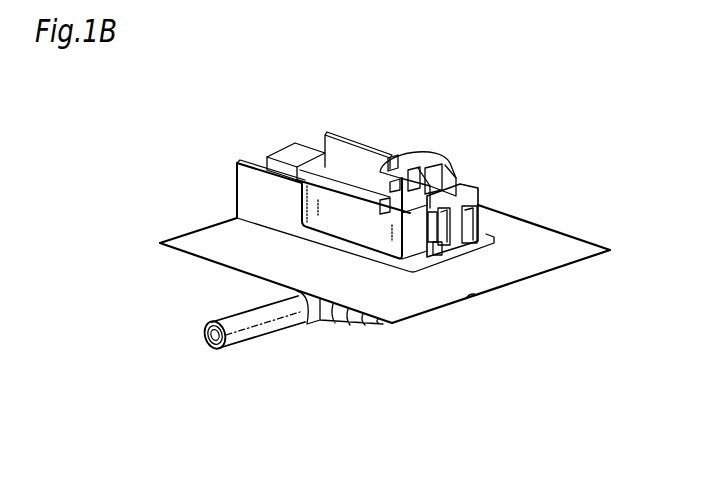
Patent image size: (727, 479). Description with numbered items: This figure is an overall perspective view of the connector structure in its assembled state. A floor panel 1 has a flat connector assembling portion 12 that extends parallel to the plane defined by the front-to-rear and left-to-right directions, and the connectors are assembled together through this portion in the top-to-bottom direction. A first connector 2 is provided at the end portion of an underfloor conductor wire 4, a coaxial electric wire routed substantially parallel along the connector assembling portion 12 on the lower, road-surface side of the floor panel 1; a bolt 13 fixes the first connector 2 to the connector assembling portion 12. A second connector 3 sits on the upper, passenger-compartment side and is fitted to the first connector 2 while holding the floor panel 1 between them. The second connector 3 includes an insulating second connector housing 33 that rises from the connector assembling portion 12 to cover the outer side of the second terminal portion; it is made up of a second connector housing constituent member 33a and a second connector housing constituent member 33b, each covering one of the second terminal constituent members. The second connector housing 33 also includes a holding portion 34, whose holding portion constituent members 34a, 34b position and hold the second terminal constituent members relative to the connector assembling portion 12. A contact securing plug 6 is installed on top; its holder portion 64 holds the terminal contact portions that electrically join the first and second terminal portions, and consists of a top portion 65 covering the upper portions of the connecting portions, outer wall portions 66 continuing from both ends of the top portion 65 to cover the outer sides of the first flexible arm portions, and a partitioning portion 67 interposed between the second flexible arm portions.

The floor panel 1 is at (388, 241).
The first connector 2 is at (292, 363).
The second connector 3 is at (348, 173).
The underfloor conductor wire 4 is at (248, 343).
The contact securing plug 6 is at (430, 173).
The connector assembling portion 12 is at (547, 235).
The bolt 13 is at (470, 297).
The second connector housing 33 is at (261, 151).
The second connector housing constituent member 33a is at (337, 138).
The second connector housing constituent member 33b is at (247, 195).
The holding portion 34 is at (364, 221).
The holding portion constituent member 34a is at (470, 193).
The holding portion constituent member 34b is at (353, 227).
The holder portion 64 is at (430, 197).
The top portion 65 is at (395, 156).
The outer wall portions 66 is at (414, 124).
The partitioning portion 67 is at (420, 170).